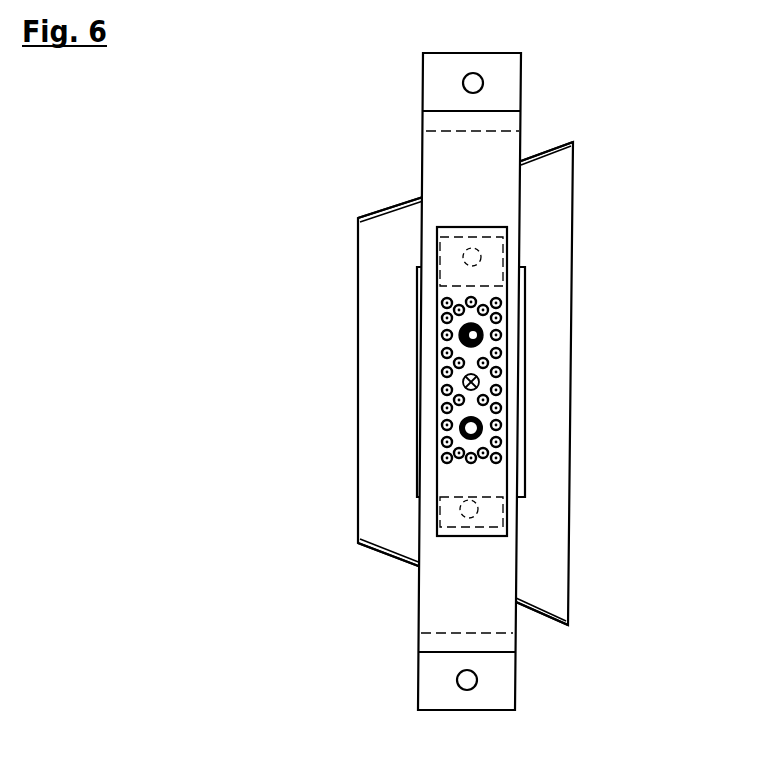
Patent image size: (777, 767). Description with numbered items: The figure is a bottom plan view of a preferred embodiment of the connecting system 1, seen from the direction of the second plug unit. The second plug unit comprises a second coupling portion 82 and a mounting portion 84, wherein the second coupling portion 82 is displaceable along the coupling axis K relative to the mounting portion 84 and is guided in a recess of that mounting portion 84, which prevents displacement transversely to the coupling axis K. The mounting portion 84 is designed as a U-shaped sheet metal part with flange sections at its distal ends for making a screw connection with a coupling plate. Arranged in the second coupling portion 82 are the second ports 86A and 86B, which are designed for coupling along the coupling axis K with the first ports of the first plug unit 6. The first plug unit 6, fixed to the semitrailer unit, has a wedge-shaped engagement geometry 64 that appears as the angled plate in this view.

The connecting system 1 is at (328, 599).
The first plug unit 6 is at (382, 243).
The wedge-shaped engagement geometry 64 is at (546, 150).
The second coupling portion 82 is at (532, 332).
The mounting portion 84 is at (503, 623).
The second ports 86A is at (497, 407).
The second ports 86B is at (483, 333).
The coupling axis K is at (478, 386).